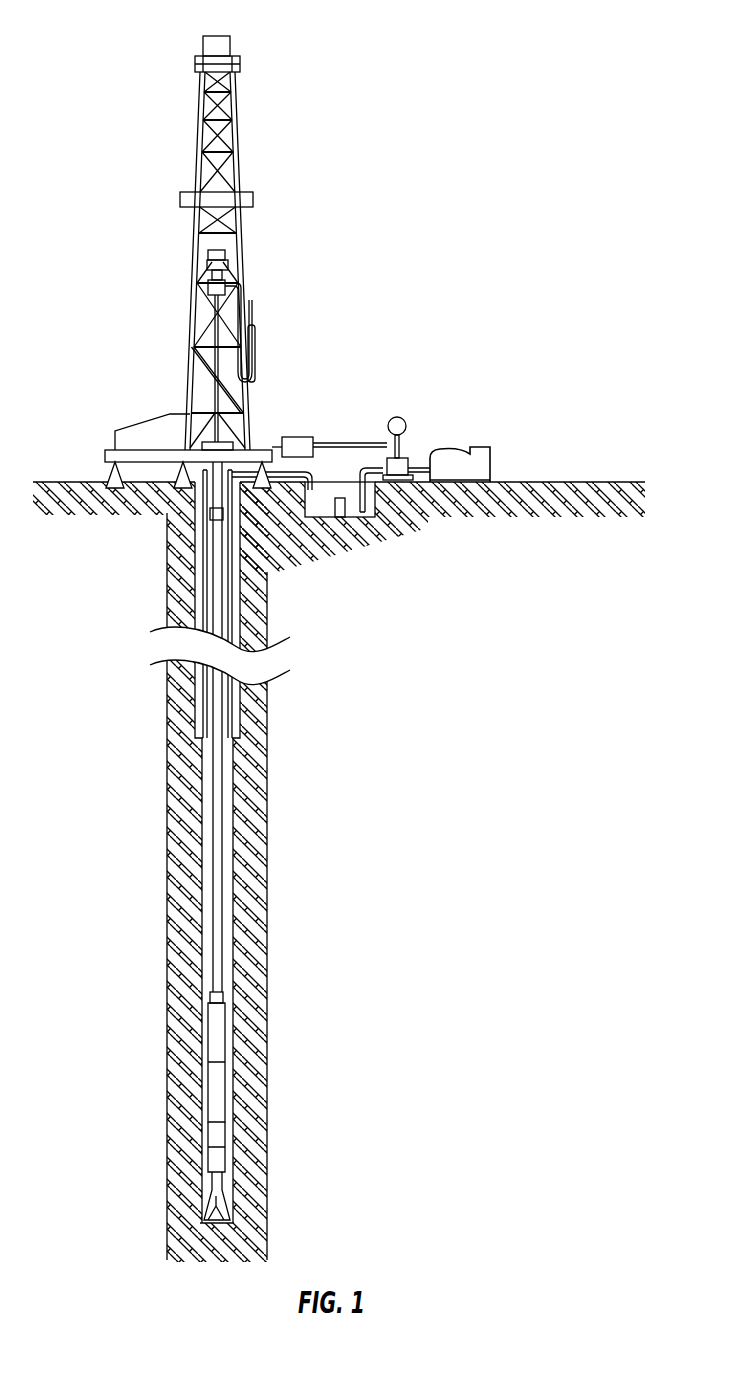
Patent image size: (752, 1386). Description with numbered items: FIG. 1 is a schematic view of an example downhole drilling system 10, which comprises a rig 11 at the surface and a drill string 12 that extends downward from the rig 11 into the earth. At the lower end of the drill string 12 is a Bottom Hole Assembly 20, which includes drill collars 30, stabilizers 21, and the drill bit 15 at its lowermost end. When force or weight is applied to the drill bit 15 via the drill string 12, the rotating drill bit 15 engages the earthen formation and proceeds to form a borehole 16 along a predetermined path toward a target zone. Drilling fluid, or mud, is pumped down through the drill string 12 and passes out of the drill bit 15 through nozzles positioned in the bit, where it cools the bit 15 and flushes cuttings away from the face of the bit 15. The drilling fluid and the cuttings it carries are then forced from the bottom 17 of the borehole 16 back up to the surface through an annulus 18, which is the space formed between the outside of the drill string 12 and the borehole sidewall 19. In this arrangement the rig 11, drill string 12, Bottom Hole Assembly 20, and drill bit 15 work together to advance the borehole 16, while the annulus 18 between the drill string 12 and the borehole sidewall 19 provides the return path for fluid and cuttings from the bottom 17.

The downhole drilling system 10 is at (472, 279).
The rig 11 is at (246, 268).
The drill string 12 is at (222, 808).
The drill bit 15 is at (215, 1198).
The borehole 16 is at (233, 1020).
The bottom 17 is at (218, 1223).
The annulus 18 is at (227, 890).
The borehole sidewall 19 is at (205, 918).
The Bottom Hole Assembly 20 is at (297, 1060).
The stabilizers 21 is at (217, 1133).
The drill collars 30 is at (217, 1093).